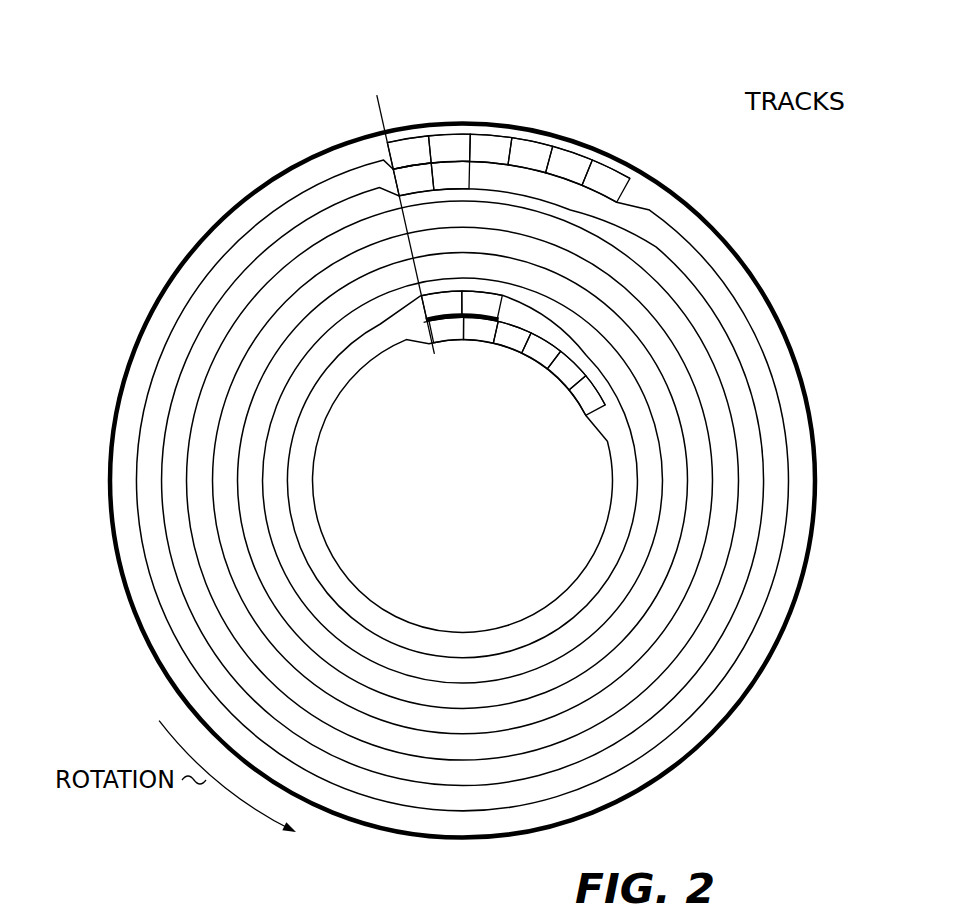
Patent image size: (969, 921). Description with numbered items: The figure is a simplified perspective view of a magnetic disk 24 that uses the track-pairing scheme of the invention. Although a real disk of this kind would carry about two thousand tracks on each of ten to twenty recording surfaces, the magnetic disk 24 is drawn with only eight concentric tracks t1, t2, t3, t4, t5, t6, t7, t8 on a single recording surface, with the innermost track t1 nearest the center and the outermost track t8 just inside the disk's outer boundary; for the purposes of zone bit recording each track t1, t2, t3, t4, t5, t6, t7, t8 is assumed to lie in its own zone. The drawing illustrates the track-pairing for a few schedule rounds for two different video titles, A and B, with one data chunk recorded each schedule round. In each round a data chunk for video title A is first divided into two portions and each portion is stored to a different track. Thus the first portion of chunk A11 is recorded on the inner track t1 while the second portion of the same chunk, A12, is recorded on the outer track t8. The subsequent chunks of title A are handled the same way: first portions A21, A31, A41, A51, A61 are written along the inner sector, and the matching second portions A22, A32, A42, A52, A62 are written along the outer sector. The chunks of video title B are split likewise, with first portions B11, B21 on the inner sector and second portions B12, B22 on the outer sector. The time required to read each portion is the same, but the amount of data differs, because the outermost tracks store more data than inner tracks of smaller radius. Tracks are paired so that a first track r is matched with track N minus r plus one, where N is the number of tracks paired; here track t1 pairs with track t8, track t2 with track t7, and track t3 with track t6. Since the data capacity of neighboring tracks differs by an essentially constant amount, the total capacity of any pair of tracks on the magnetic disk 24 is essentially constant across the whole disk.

The magnetic disk 24 is at (150, 207).
The track t1 is at (605, 430).
The track t2 is at (630, 427).
The track t3 is at (655, 423).
The track t4 is at (680, 420).
The track t5 is at (703, 409).
The track t6 is at (737, 444).
The track t7 is at (763, 457).
The track t8 is at (789, 474).
The second portion of chunk A1 A12 is at (408, 143).
The second portion of chunk A2 A22 is at (450, 141).
The second portion of chunk A3 A32 is at (491, 141).
The second portion of chunk A4 A42 is at (533, 148).
The second portion of chunk A5 A52 is at (572, 160).
The second portion of chunk A6 A62 is at (610, 178).
The second portion of chunk B1 B12 is at (408, 178).
The second portion of chunk B2 B22 is at (450, 176).
The first portion of chunk A1 A11 is at (450, 333).
The first portion of chunk A2 A21 is at (480, 333).
The first portion of chunk A3 A31 is at (512, 340).
The first portion of chunk A4 A41 is at (541, 352).
The first portion of chunk A5 A51 is at (566, 372).
The first portion of chunk A6 A61 is at (587, 398).
The first portion of chunk B1 B11 is at (447, 312).
The first portion of chunk B2 B21 is at (466, 308).